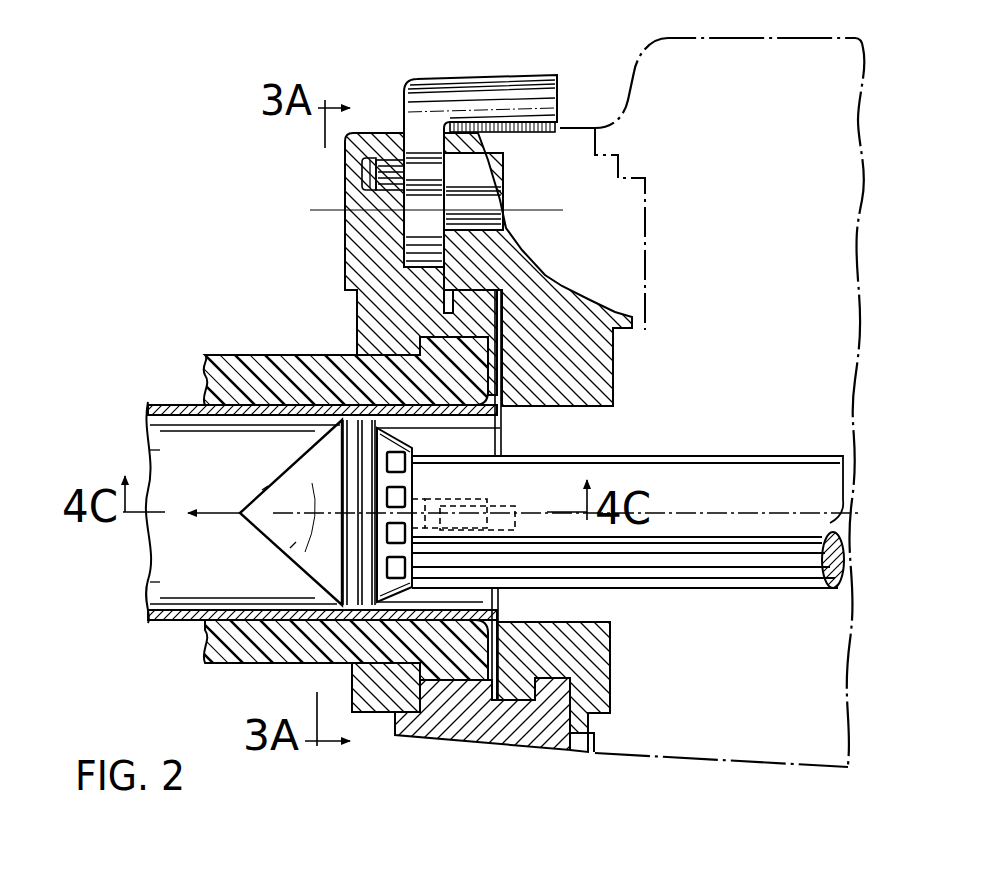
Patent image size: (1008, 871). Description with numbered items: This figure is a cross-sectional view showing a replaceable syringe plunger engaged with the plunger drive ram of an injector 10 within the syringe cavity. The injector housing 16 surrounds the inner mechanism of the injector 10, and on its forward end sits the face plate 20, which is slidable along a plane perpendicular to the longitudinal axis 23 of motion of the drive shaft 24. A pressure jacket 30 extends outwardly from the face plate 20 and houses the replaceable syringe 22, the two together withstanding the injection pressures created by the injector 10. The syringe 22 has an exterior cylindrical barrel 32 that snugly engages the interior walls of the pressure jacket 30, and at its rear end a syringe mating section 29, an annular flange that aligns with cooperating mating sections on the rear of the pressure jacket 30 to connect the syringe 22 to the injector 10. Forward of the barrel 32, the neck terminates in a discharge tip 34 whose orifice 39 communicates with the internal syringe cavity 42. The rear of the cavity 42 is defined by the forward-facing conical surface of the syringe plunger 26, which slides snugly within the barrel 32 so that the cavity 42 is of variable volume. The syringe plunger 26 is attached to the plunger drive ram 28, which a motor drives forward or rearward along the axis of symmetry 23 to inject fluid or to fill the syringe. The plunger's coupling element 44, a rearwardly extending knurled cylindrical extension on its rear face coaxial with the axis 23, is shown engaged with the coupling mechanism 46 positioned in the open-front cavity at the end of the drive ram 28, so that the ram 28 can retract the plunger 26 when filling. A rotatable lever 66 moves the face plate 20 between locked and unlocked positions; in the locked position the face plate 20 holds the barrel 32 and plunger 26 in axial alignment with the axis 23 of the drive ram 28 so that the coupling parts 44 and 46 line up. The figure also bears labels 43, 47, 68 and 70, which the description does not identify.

The injector 10 is at (726, 30).
The injector housing 16 is at (676, 752).
The face plate 20 is at (340, 258).
The syringe 22 is at (160, 398).
The longitudinal axis 23 is at (726, 516).
The drive shaft 24 is at (702, 453).
The syringe plunger 26 is at (248, 534).
The plunger drive ram 28 is at (716, 590).
The syringe mating section 29 is at (484, 640).
The pressure jacket 30 is at (222, 353).
The cylindrical barrel 32 is at (165, 585).
The discharge tip 34 is at (170, 0).
The orifice 39 is at (136, 0).
The syringe cavity 42 is at (165, 451).
The conical surface 43 is at (262, 490).
The coupling element 44 is at (432, 500).
The coupling mechanism 46 is at (504, 504).
The cone shoulder 47 is at (278, 556).
The rotatable lever 66 is at (472, 92).
The bolt 68 is at (385, 162).
The bolt head 70 is at (358, 183).